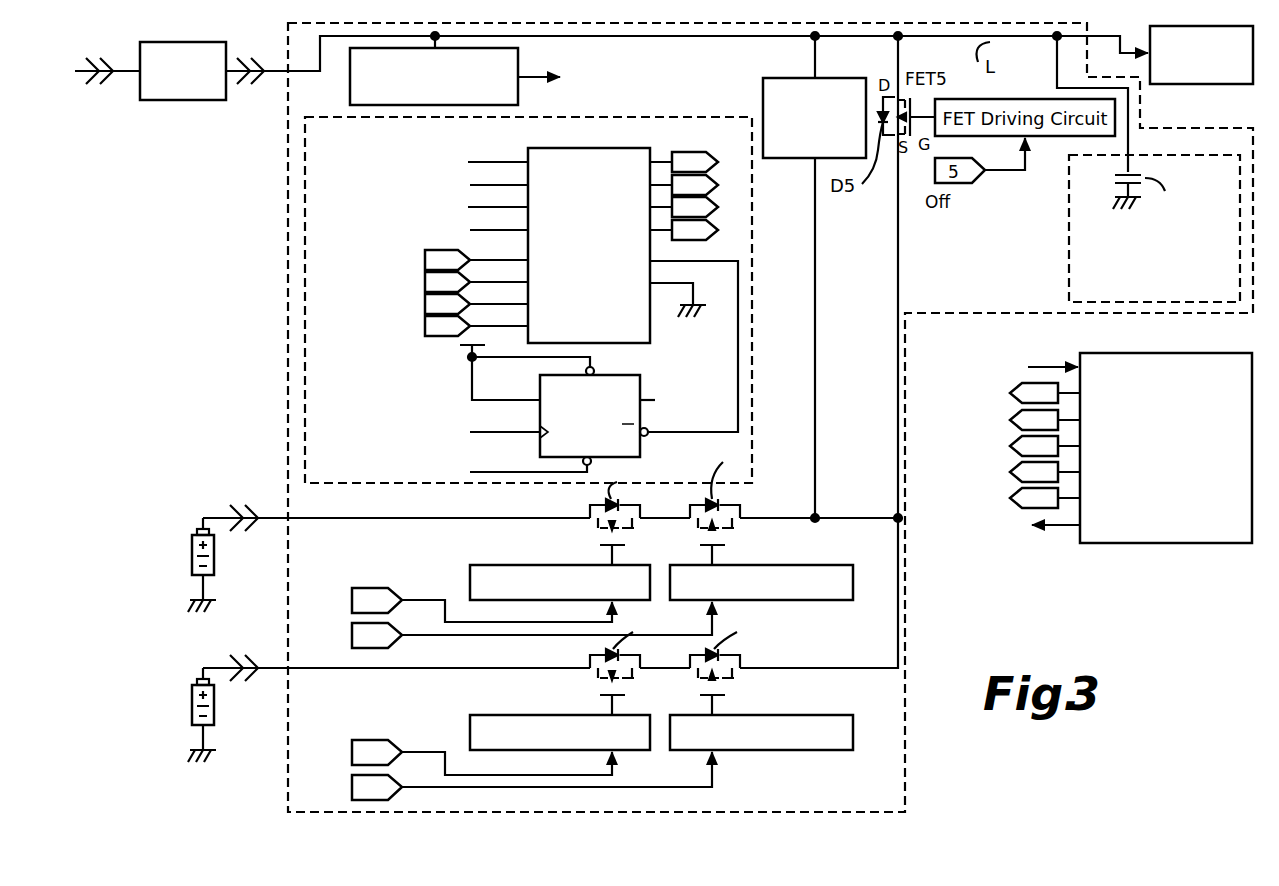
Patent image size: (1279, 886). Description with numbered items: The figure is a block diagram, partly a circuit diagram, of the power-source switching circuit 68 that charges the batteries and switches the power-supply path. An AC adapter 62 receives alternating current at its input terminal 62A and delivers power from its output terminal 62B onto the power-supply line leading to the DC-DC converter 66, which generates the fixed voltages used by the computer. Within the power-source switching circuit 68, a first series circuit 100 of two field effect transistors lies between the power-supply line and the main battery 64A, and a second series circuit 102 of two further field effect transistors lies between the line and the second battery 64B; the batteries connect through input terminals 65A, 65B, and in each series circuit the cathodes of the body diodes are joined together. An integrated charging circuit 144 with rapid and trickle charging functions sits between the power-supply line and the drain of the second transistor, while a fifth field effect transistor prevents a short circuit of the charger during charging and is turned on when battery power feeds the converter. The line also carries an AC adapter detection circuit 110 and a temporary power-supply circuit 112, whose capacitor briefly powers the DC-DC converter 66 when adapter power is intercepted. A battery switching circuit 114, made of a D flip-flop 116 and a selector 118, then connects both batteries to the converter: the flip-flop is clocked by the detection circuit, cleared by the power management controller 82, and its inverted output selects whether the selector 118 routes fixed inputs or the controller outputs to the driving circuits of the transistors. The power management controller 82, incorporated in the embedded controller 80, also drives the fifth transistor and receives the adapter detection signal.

The AC adapter 62 is at (160, 100).
The input terminal 62A is at (97, 88).
The output terminal 62B is at (245, 88).
The DC/DC converter 66 is at (1226, 84).
The power-source switching circuit 68 is at (288, 200).
The embedded controller 80 is at (1180, 578).
The power management controller (PMC) 82 is at (1225, 543).
The main battery 64A is at (192, 553).
The second battery 64B is at (192, 703).
The input terminal 65A is at (241, 506).
The input terminal 65B is at (241, 665).
The first series circuit 100 is at (772, 492).
The second series circuit 102 is at (764, 644).
The AC adapter detection circuit 110 is at (518, 70).
The temporary power-supply circuit 112 is at (1069, 222).
The battery switching circuit 114 is at (305, 375).
The D flip-flop 116 is at (640, 455).
The selector 118 is at (528, 150).
The integrated charging circuit 144 is at (763, 96).